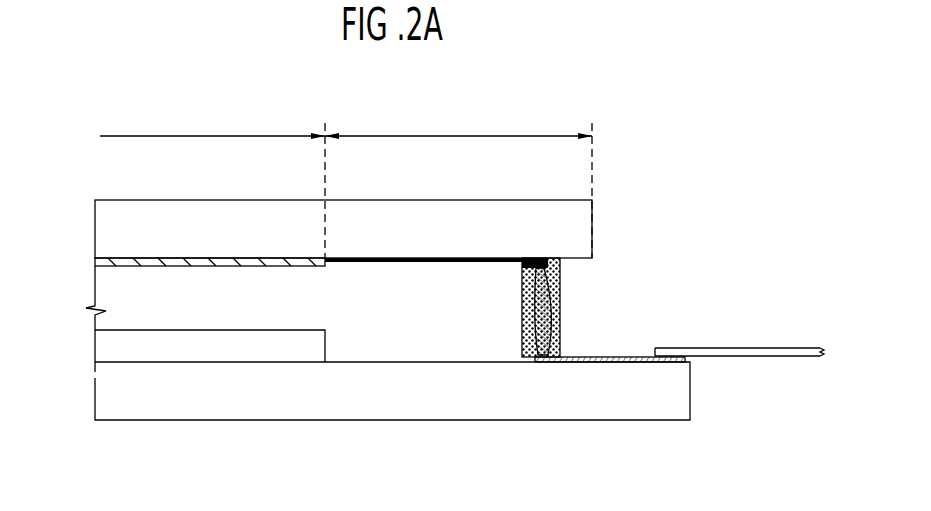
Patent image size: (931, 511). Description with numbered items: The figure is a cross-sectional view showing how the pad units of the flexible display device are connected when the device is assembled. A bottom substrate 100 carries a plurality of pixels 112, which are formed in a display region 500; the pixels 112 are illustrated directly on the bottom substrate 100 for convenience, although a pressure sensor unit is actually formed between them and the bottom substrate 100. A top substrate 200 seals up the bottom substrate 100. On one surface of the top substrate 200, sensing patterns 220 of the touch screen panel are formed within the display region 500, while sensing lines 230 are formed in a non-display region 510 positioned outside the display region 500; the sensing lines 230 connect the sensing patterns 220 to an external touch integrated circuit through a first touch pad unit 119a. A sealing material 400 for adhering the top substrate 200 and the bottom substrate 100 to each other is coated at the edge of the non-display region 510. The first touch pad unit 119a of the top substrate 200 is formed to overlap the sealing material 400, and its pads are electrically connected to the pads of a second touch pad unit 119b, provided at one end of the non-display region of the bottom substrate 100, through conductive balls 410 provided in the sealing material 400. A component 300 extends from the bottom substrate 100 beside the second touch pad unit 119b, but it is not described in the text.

The display region 500 is at (212, 183).
The non-display region 510 is at (458, 183).
The top substrate 200 is at (585, 233).
The sensing patterns 220 is at (95, 262).
The sensing lines 230 is at (423, 265).
The first touch pad unit 119a is at (535, 258).
The sealing material 400 is at (560, 298).
The conductive balls 410 is at (552, 325).
The second touch pad unit 119b is at (593, 365).
The flexible printed circuit 300 is at (782, 350).
The pixels 112 is at (95, 348).
The bottom substrate 100 is at (678, 392).